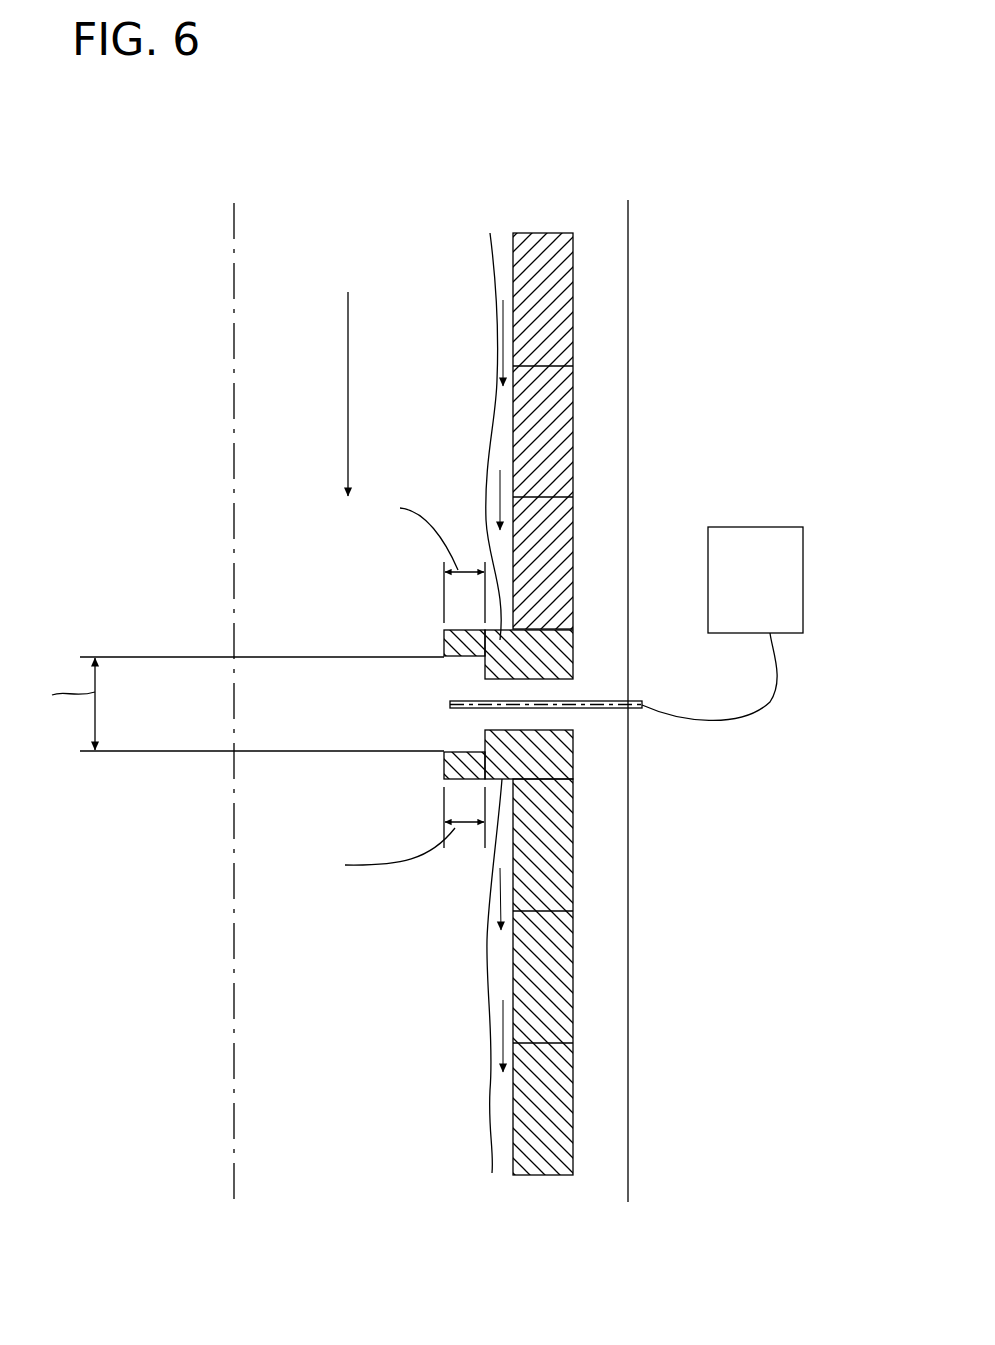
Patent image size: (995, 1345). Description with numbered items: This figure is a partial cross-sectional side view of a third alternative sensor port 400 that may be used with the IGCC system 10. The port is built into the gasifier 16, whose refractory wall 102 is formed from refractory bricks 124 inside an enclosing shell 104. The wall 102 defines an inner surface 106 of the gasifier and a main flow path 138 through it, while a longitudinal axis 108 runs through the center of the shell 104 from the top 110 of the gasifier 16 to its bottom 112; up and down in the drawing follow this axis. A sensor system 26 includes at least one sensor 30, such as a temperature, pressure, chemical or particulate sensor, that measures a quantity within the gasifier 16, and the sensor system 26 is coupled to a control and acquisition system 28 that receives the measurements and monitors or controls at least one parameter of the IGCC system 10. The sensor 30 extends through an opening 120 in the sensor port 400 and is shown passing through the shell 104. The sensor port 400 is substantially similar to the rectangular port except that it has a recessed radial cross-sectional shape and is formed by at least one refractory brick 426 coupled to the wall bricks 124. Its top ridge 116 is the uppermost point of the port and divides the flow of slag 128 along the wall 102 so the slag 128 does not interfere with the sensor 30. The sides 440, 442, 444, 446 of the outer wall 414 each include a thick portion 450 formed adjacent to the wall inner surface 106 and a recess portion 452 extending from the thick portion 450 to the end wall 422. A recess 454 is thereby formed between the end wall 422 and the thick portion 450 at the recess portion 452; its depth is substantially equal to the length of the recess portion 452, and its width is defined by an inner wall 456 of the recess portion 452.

The IGCC system 10 is at (294, 177).
The gasifier 16 is at (324, 429).
The sensor system 26 is at (648, 662).
The control and acquisition system 28 is at (773, 592).
The sensor 30 is at (640, 713).
The wall 102 is at (496, 317).
The shell 104 is at (598, 303).
The inner surface 106 is at (513, 358).
The longitudinal axis 108 is at (234, 922).
The top 110 is at (400, 230).
The bottom 112 is at (367, 1142).
The top ridge 116 is at (444, 628).
The opening 120 is at (479, 719).
The refractory bricks 124 is at (562, 414).
The slag 128 is at (496, 413).
The main flow path 138 is at (348, 363).
The third alternative sensor port 400 is at (432, 800).
The outer wall 414 is at (465, 840).
The end wall 422 is at (443, 765).
The refractory brick 426 is at (439, 655).
The side 440 is at (302, 557).
The side 442 is at (467, 607).
The side 444 is at (400, 868).
The side 446 is at (487, 857).
The thick portion 450 is at (492, 573).
The recess portion 452 is at (455, 640).
The recess 454 is at (562, 778).
The inner wall 456 is at (466, 657).